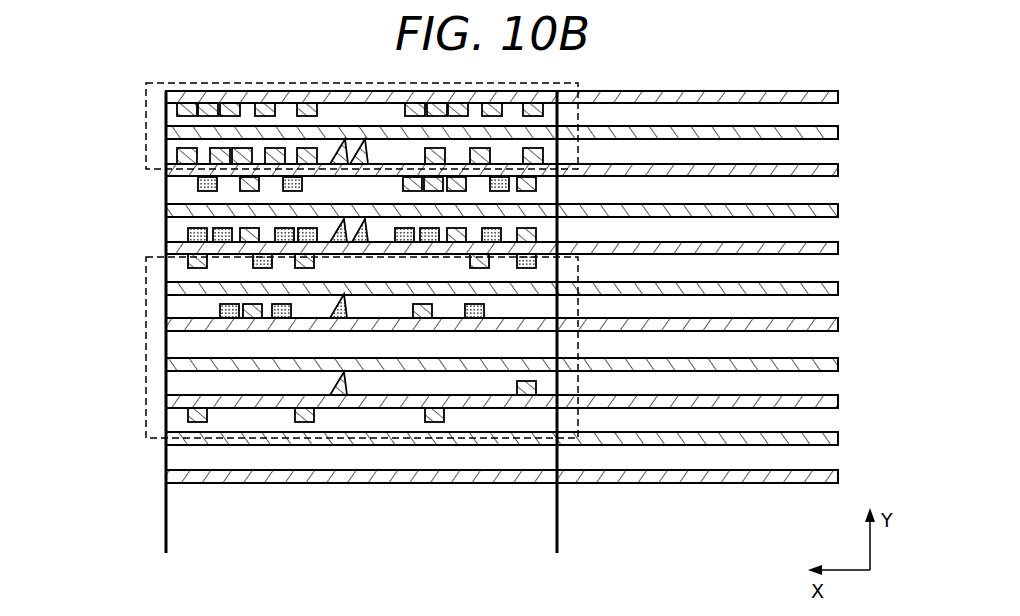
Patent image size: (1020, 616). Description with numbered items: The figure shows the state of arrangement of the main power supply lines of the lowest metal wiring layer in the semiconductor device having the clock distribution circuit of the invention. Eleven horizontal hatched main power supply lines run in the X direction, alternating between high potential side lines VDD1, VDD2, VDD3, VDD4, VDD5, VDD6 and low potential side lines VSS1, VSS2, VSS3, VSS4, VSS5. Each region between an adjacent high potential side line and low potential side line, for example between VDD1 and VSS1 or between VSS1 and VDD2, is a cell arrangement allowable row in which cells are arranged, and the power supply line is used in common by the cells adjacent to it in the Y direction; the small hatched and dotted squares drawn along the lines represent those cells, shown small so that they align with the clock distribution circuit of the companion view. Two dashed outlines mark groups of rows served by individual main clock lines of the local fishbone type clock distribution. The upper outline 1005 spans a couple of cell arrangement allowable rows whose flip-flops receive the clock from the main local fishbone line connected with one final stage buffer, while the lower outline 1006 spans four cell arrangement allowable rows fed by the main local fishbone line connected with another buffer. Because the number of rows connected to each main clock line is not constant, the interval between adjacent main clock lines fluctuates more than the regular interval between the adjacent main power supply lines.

The region of a couple of cell arrangement allowable rows 1005 is at (145, 108).
The region of four cell arrangement allowable rows 1006 is at (145, 340).
The high potential side main power supply line VDD1 is at (840, 97).
The low potential side main power supply line VSS1 is at (840, 132).
The high potential side main power supply line VDD2 is at (840, 170).
The low potential side main power supply line VSS2 is at (840, 210).
The high potential side main power supply line VDD3 is at (840, 248).
The low potential side main power supply line VSS3 is at (840, 288).
The high potential side main power supply line VDD4 is at (840, 324).
The low potential side main power supply line VSS4 is at (840, 364).
The high potential side main power supply line VDD5 is at (840, 401).
The low potential side main power supply line VSS5 is at (840, 438).
The high potential side main power supply line VDD6 is at (840, 476).